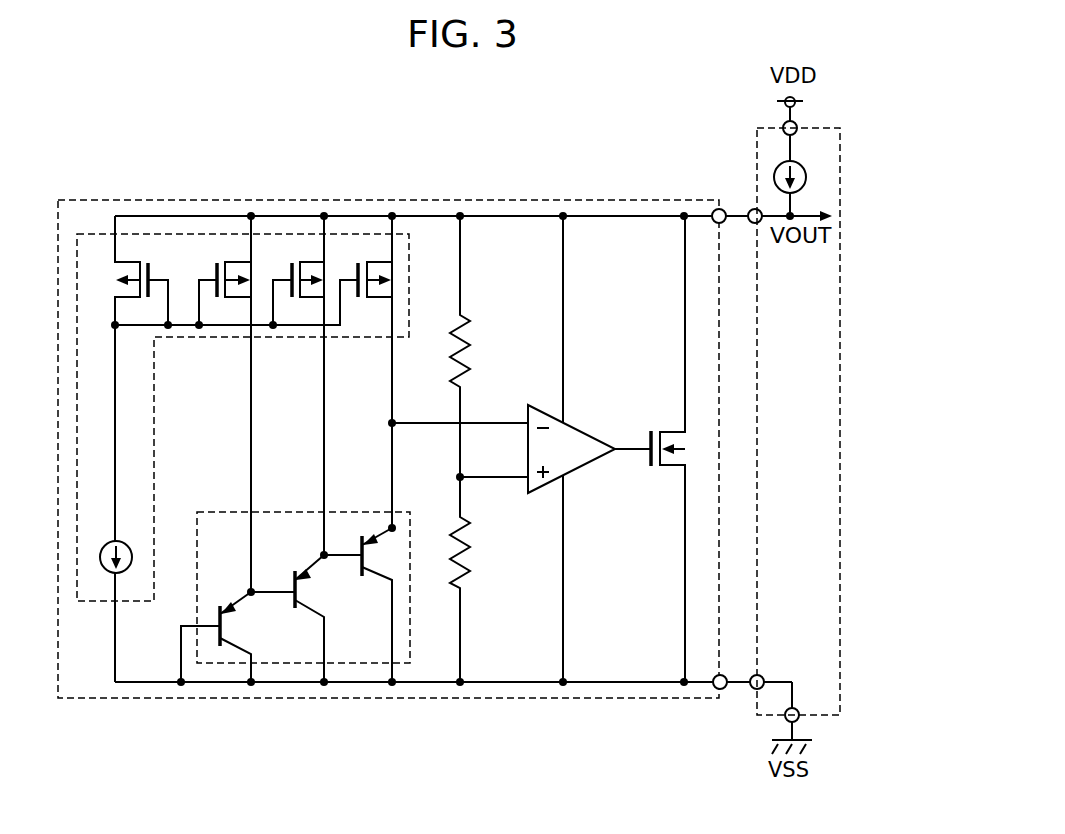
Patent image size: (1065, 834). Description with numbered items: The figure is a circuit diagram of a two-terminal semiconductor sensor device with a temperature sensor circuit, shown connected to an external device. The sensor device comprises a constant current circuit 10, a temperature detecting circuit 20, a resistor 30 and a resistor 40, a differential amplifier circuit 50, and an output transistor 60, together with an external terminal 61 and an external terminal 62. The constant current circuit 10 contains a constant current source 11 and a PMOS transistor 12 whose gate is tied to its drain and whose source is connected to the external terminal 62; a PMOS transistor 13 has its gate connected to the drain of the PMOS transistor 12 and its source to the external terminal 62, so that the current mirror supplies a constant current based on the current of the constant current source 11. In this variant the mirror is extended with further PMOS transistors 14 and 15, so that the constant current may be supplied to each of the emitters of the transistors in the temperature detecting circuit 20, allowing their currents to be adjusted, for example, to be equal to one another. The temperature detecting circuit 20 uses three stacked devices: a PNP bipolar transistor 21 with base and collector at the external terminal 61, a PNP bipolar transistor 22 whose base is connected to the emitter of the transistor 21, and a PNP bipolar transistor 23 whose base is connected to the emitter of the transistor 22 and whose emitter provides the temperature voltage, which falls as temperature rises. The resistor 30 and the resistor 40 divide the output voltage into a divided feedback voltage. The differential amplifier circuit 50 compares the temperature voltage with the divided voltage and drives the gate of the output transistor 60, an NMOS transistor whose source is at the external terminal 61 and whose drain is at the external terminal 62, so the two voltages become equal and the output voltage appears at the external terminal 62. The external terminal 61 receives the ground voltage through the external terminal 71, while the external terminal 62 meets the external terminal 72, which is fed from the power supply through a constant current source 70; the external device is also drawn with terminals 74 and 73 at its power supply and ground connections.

The constant current circuit 10 is at (154, 425).
The constant current source 11 is at (132, 553).
The PMOS transistor 12 is at (128, 300).
The PMOS transistor 13 is at (233, 300).
The MOS transistor 14 is at (305, 300).
The MOS transistor 15 is at (377, 300).
The temperature detecting circuit 20 is at (233, 512).
The PNP bipolar transistor 21 is at (240, 602).
The PNP bipolar transistor 22 is at (314, 572).
The PNP bipolar transistor 23 is at (382, 530).
The resistor 30 is at (471, 355).
The resistor 40 is at (471, 557).
The differential amplifier circuit 50 is at (579, 429).
The output transistor 60 is at (648, 430).
The external terminal 61 is at (716, 690).
The external terminal 62 is at (713, 208).
The constant current source 70 is at (776, 168).
The external terminal 71 is at (752, 690).
The external terminal 72 is at (750, 208).
The VSS terminal 73 is at (800, 718).
The VDD terminal 74 is at (782, 124).